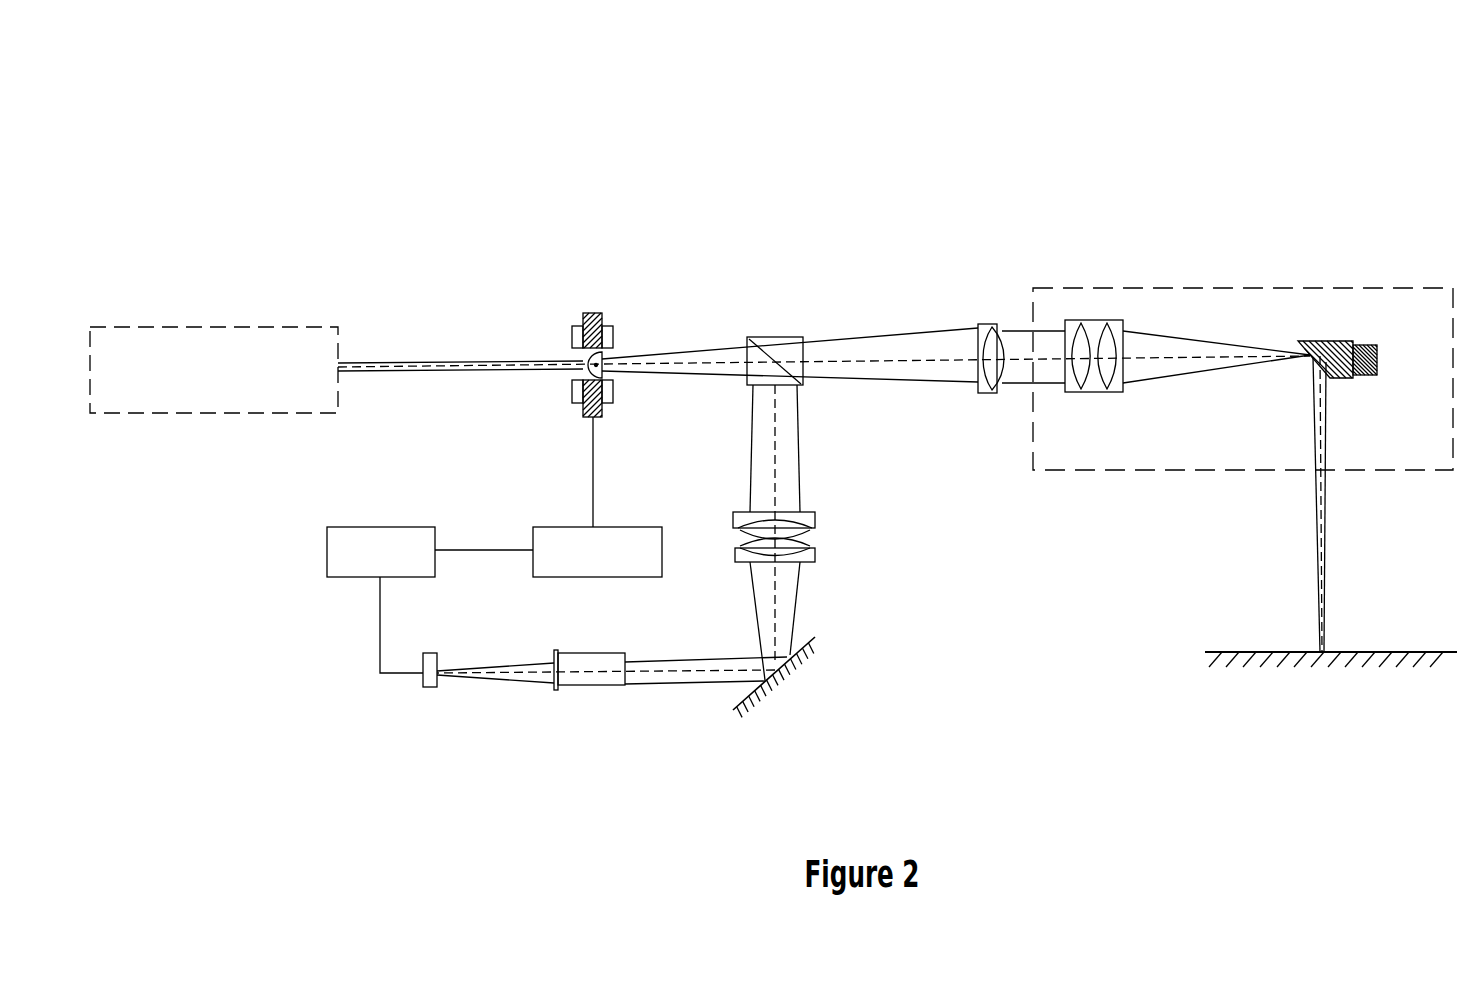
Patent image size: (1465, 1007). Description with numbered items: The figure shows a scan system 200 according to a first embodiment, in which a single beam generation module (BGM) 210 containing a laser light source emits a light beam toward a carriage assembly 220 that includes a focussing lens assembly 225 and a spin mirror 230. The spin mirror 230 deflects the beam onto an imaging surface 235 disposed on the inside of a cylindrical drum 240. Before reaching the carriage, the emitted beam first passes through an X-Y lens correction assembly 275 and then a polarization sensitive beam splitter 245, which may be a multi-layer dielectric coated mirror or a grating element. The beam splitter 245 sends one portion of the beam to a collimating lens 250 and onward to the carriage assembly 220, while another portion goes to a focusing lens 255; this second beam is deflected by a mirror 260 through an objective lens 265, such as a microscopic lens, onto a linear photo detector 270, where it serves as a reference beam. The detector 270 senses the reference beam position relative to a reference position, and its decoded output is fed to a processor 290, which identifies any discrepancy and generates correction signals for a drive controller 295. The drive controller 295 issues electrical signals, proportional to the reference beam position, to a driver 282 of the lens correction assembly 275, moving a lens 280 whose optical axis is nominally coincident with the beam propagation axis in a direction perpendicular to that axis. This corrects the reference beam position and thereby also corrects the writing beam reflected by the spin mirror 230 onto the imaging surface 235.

The scan system 200 is at (1055, 97).
The single beam generation module (BGM) 210 is at (180, 324).
The carriage assembly 220 is at (1033, 437).
The focussing lens assembly 225 is at (1068, 390).
The spin mirror 230 is at (1350, 378).
The imaging surface 235 is at (1291, 652).
The cylindrical drum 240 is at (1258, 672).
The polarization sensitive beam splitter 245 is at (763, 340).
The collimating lens 250 is at (978, 326).
The focusing lens 255 is at (823, 541).
The mirror 260 is at (807, 677).
The objective lens 265 is at (580, 685).
The linear photo detector 270 is at (431, 687).
The X-Y lens correction assembly 275 is at (564, 405).
The lens 280 is at (606, 364).
The driver 282 is at (602, 411).
The processor 290 is at (342, 578).
The drive controller 295 is at (610, 578).